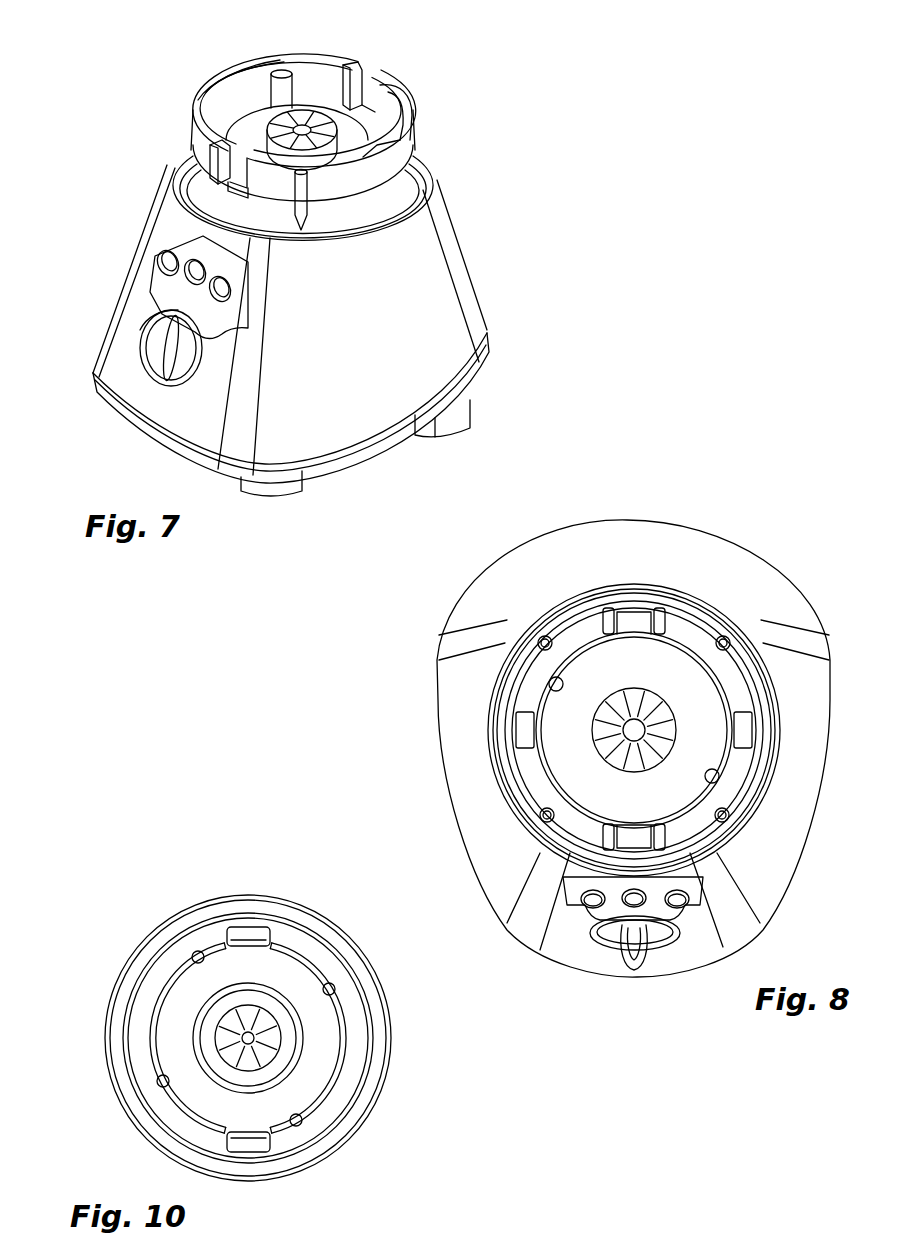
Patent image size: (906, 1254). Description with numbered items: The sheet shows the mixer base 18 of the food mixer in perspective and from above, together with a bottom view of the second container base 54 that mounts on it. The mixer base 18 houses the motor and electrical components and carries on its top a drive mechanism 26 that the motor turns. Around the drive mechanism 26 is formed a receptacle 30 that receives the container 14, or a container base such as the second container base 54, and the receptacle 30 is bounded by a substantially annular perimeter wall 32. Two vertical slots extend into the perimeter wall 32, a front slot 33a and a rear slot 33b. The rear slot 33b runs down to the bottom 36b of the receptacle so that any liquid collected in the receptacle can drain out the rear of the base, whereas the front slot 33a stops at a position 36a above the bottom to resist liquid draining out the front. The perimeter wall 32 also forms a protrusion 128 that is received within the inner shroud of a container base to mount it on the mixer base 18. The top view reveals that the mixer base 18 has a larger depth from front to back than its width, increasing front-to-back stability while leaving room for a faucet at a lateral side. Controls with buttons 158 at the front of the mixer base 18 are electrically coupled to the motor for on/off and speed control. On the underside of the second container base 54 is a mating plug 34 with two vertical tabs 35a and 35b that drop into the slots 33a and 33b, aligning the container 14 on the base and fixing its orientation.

In FIG. 10, the container 14 is at (100, 1033).
In FIG. 7, the mixer base 18 is at (360, 443).
In FIG. 8, the mixer base 18 is at (823, 802).
In FIG. 7, the drive mechanism 26 is at (308, 107).
In FIG. 8, the drive mechanism 26 is at (608, 758).
In FIG. 7, the receptacle 30 is at (258, 58).
In FIG. 8, the receptacle 30 is at (587, 633).
In FIG. 7, the perimeter wall 32 is at (207, 85).
In FIG. 8, the perimeter wall 32 is at (545, 640).
In FIG. 7, the front slot 33a is at (212, 165).
In FIG. 8, the front slot 33a is at (625, 840).
In FIG. 7, the rear slot 33b is at (362, 78).
In FIG. 8, the rear slot 33b is at (630, 627).
In FIG. 10, the mating plug 34 is at (170, 983).
In FIG. 10, the vertical tab 35a is at (253, 1147).
In FIG. 10, the vertical tab 35b is at (253, 927).
In FIG. 7, the position above the bottom 36a is at (225, 197).
In FIG. 8, the position above the bottom 36a is at (644, 822).
In FIG. 7, the bottom of the base receptacle 36b is at (363, 125).
In FIG. 8, the bottom of the base receptacle 36b is at (637, 630).
In FIG. 10, the second container base 54 is at (360, 1097).
In FIG. 8, the protrusion 128 is at (700, 647).
In FIG. 8, the buttons 158 is at (697, 907).